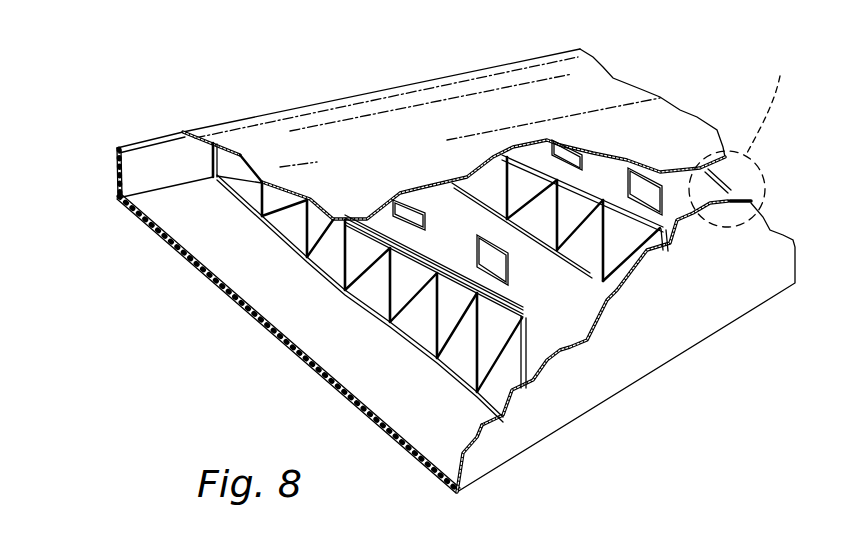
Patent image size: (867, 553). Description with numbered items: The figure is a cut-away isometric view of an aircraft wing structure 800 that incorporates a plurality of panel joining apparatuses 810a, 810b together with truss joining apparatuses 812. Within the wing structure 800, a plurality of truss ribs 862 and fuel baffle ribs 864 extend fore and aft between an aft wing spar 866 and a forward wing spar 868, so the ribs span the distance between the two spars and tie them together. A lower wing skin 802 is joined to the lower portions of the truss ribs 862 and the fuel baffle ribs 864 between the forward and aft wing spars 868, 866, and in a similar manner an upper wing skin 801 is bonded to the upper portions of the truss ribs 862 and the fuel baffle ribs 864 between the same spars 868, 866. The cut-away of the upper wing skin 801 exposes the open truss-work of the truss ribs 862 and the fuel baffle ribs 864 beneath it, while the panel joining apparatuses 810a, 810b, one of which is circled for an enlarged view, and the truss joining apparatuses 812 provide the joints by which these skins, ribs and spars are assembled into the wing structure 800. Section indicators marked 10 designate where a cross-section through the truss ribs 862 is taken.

The aircraft wing structure 800 is at (122, 285).
The upper wing skin 801 is at (637, 83).
The lower wing skin 802 is at (257, 320).
The panel joining apparatus 810a is at (746, 173).
The panel joining apparatus 810b is at (755, 190).
The truss joining apparatus 812 is at (360, 228).
The truss rib 862 is at (400, 197).
The fuel baffle rib 864 is at (678, 195).
The aft wing spar 866 is at (115, 166).
The forward wing spar 868 is at (427, 463).
The section line (Fig. 10) 10 is at (290, 222).